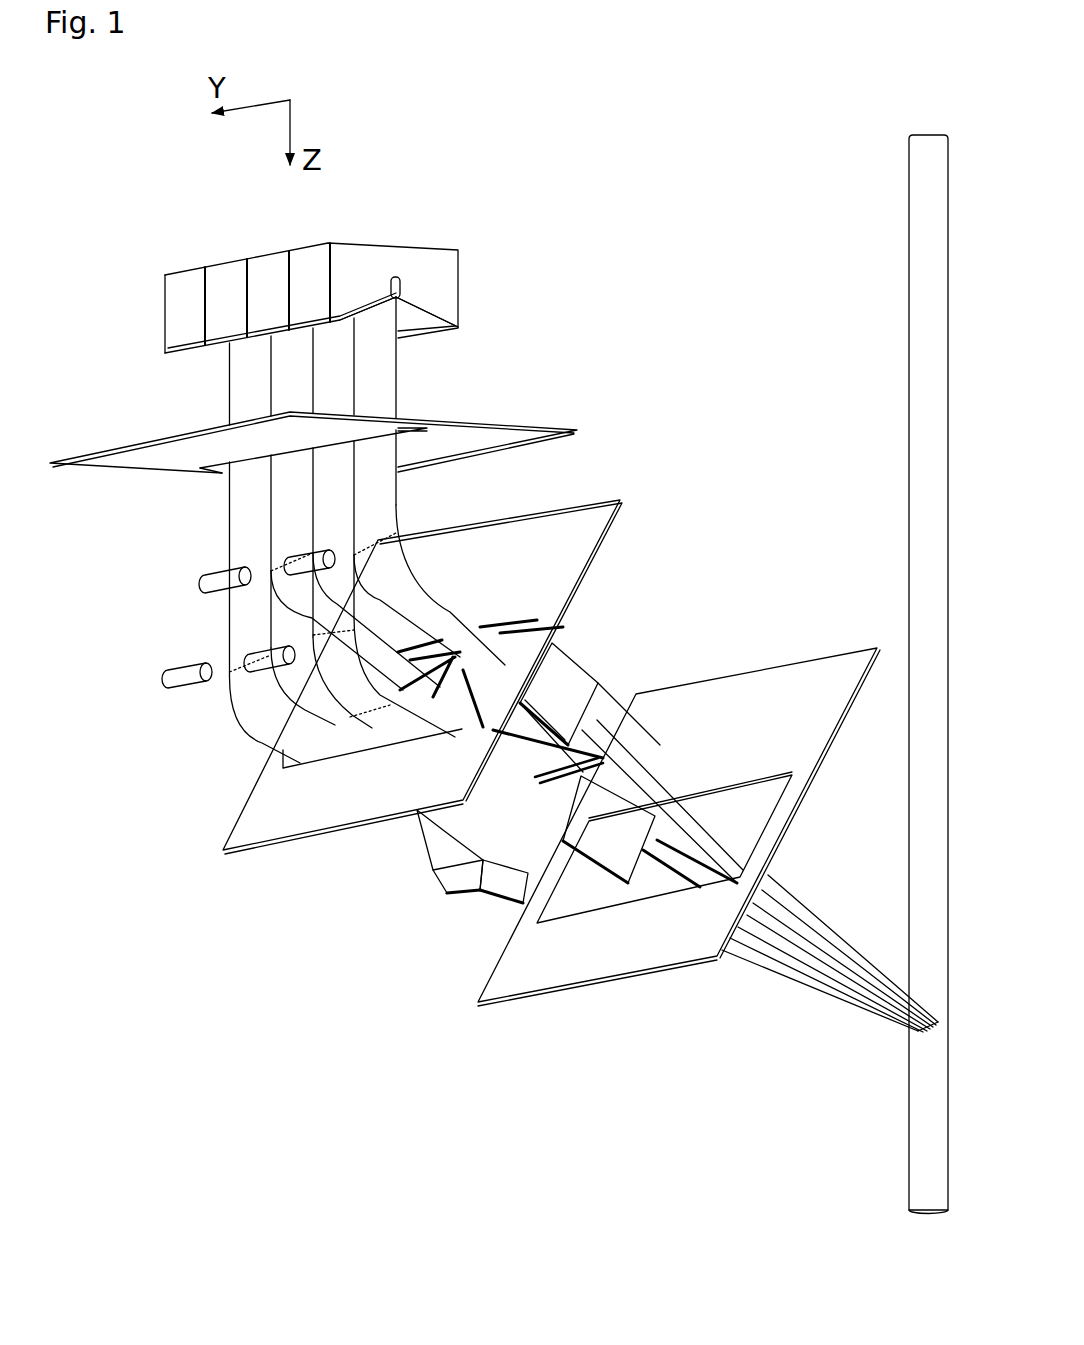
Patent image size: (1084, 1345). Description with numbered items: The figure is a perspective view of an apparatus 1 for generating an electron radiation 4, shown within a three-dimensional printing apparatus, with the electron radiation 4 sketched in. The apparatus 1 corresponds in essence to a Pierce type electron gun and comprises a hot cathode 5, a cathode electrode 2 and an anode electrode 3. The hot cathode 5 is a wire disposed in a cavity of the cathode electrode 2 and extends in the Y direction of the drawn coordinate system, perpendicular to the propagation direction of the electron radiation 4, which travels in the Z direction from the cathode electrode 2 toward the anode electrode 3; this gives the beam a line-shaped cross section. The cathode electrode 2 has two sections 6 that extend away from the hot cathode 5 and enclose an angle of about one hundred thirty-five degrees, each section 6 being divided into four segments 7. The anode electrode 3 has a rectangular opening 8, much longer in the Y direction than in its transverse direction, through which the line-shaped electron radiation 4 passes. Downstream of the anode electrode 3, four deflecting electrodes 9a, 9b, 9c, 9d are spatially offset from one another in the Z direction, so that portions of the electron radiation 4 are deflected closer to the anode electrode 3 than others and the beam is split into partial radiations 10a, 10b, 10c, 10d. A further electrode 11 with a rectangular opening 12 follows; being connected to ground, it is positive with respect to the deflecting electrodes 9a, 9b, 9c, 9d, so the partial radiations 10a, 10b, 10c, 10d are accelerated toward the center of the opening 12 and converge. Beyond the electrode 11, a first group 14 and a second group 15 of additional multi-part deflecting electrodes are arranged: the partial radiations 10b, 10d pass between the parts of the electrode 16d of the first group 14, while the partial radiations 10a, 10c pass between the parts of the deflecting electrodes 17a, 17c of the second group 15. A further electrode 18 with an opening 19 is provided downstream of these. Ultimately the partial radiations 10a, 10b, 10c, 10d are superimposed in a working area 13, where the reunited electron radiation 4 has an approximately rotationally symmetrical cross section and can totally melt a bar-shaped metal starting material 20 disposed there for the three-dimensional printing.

The apparatus 1 is at (245, 1030).
The cathode electrode 2 is at (348, 255).
The anode electrode 3 is at (377, 477).
The electron radiation 4 is at (523, 692).
The hot cathode 5 is at (396, 288).
The sections 6 is at (367, 307).
The segments 7 is at (270, 277).
The opening 8 is at (220, 467).
The deflecting electrode 9a is at (183, 681).
The deflecting electrode 9b is at (218, 580).
The deflecting electrode 9c is at (265, 664).
The deflecting electrode 9d is at (305, 563).
The partial radiation 10a is at (273, 718).
The partial radiation 10b is at (375, 652).
The partial radiation 10c is at (357, 702).
The partial radiation 10d is at (458, 634).
The further electrode 11 is at (245, 848).
The opening 12 is at (518, 647).
The working area 13 is at (903, 1040).
The first group 14 is at (643, 649).
The second group 15 is at (467, 898).
The deflecting electrode 16d is at (562, 698).
The deflecting electrode 17a is at (503, 887).
The deflecting electrode 17c is at (610, 833).
The further electrode 18 is at (679, 895).
The opening 19 is at (740, 805).
The bar-shaped starting material 20 is at (927, 193).